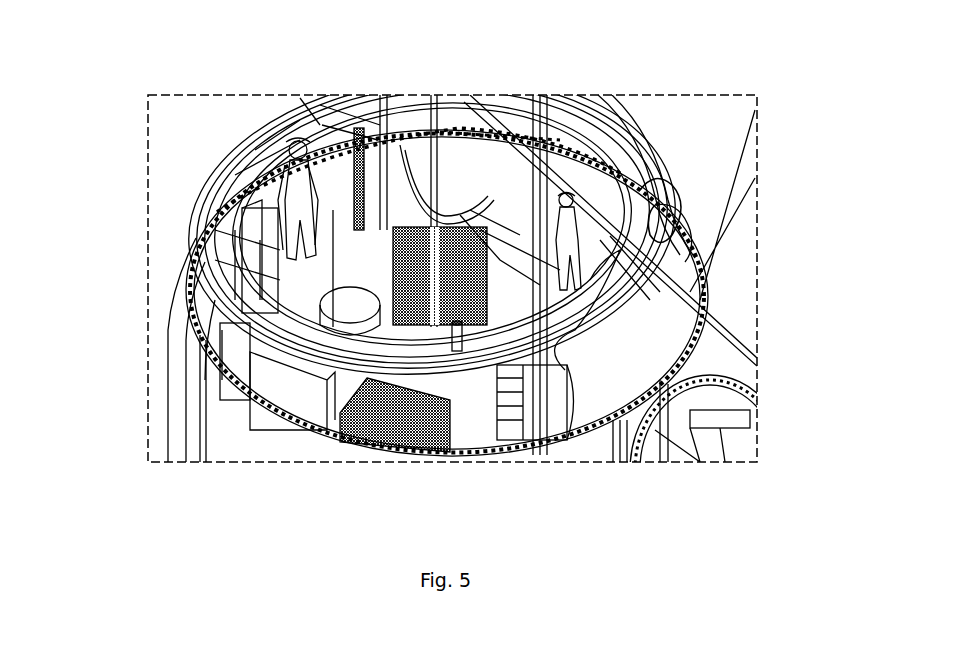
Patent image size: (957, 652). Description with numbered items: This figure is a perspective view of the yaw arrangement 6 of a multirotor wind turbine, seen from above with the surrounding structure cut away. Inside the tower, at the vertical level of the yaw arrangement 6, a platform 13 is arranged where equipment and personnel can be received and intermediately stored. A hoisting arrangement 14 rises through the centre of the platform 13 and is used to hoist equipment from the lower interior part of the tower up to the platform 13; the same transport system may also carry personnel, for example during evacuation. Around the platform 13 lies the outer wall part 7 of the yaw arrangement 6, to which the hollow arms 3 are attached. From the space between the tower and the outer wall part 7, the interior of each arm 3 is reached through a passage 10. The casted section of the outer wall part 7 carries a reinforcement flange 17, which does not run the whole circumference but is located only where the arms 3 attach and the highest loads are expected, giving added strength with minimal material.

The arm 3 is at (673, 387).
The yaw arrangement 6 is at (147, 185).
The outer wall part 7 is at (188, 402).
The passage 10 is at (472, 183).
The platform 13 is at (562, 320).
The hoisting arrangement 14 is at (432, 128).
The reinforcement flange 17 is at (662, 330).